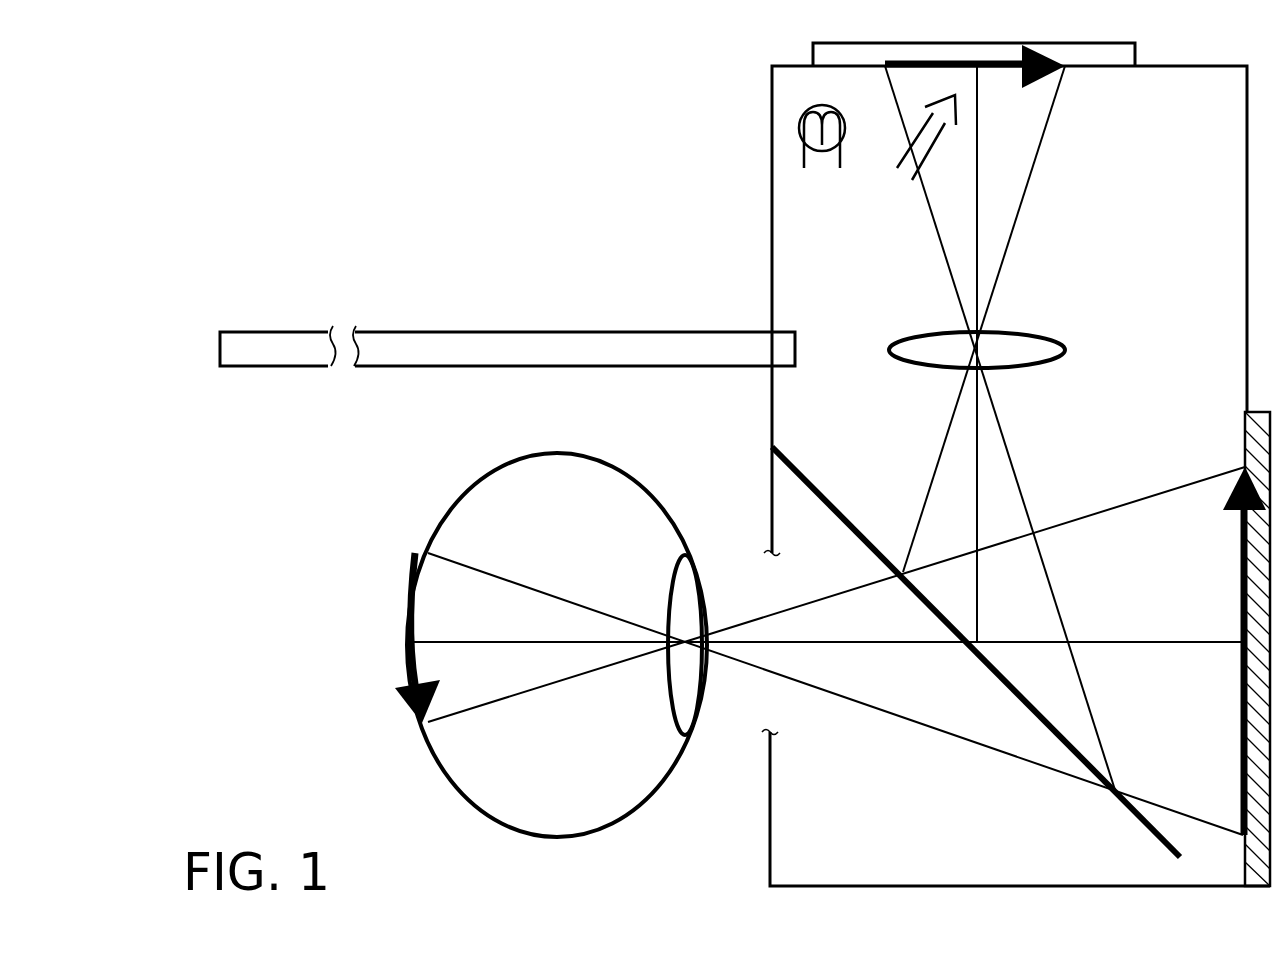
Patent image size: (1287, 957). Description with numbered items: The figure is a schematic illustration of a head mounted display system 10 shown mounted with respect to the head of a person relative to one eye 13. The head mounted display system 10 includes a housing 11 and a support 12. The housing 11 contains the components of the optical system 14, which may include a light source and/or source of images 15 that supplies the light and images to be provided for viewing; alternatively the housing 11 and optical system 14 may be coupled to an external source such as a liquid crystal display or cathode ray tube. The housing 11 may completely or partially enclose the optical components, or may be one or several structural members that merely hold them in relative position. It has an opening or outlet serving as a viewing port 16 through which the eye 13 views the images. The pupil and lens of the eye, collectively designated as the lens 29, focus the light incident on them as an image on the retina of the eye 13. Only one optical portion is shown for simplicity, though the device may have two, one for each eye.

The head mounted display system 10 is at (735, 192).
The housing 11 is at (772, 243).
The support 12 is at (645, 331).
The eye 13 is at (602, 458).
The optical system 14 is at (805, 406).
The light source and/or source of images 15 is at (768, 44).
The viewing port 16 is at (772, 698).
The lens of the eye 29 is at (700, 590).